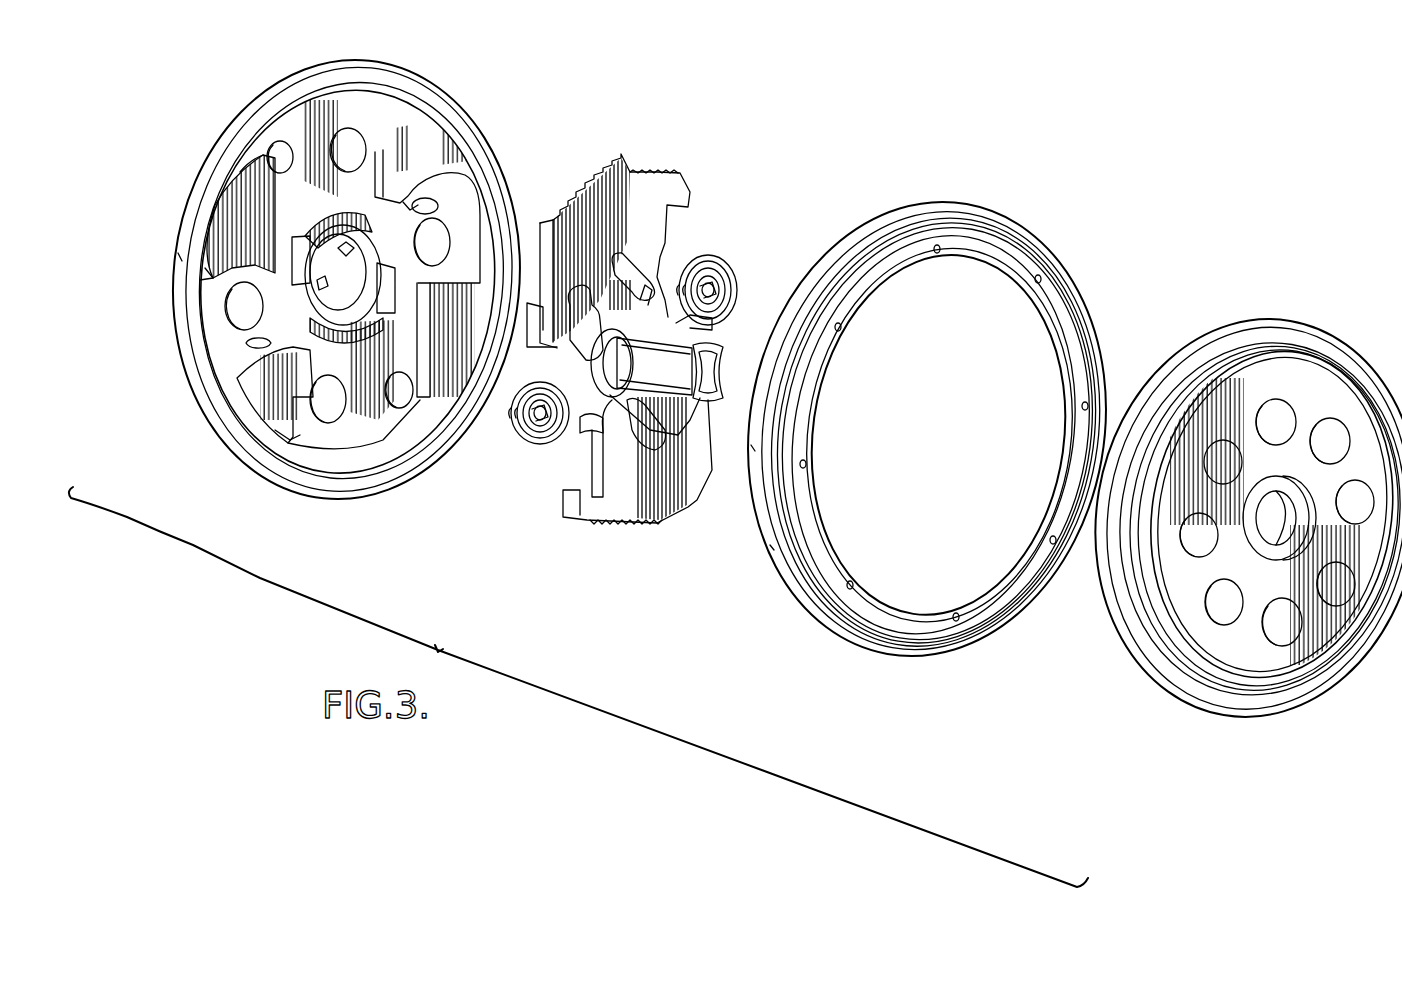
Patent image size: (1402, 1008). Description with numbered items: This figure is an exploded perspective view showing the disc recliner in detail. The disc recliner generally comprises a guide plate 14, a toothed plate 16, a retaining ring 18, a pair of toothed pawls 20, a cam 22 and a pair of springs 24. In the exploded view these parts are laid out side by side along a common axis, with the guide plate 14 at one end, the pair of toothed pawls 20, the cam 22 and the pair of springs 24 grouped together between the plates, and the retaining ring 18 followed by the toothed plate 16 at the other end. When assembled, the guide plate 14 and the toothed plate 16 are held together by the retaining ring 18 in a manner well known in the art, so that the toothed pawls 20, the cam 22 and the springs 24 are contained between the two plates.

The guide plate 14 is at (242, 110).
The toothed plate 16 is at (1242, 320).
The retaining ring 18 is at (914, 204).
The toothed pawls 20 is at (660, 193).
The cam 22 is at (595, 412).
The springs 24 is at (727, 260).